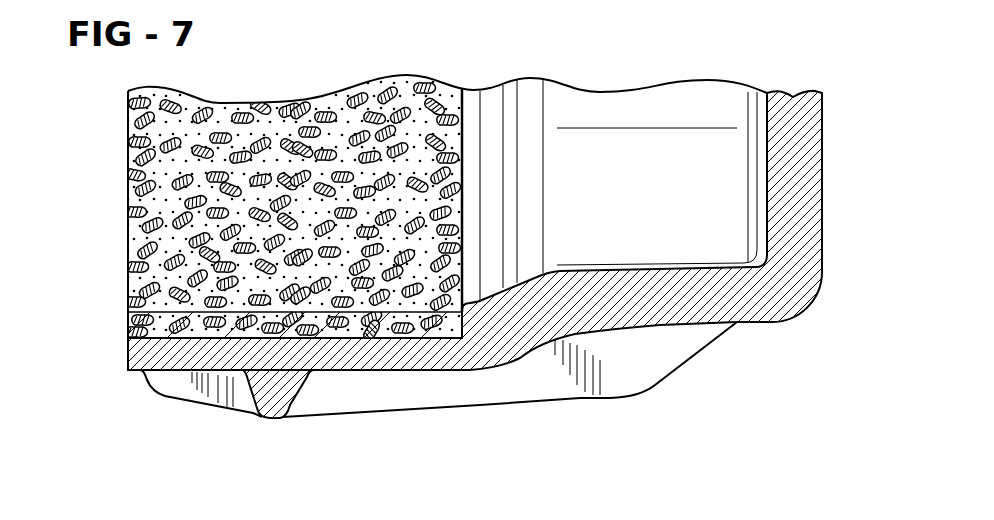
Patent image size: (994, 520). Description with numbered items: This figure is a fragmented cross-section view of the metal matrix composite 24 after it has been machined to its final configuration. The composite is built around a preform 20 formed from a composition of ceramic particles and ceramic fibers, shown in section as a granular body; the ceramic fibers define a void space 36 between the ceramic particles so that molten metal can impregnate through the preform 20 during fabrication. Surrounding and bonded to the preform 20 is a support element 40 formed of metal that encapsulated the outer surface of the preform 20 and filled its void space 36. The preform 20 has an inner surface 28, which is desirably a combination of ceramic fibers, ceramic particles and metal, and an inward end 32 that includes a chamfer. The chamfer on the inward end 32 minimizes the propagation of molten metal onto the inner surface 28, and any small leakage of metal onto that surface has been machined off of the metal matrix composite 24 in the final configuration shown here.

The preform 20 is at (127, 327).
The metal matrix composite 24 is at (711, 350).
The inner surface 28 is at (199, 192).
The inward end 32 is at (440, 316).
The void space 36 is at (259, 140).
The support element 40 is at (614, 157).